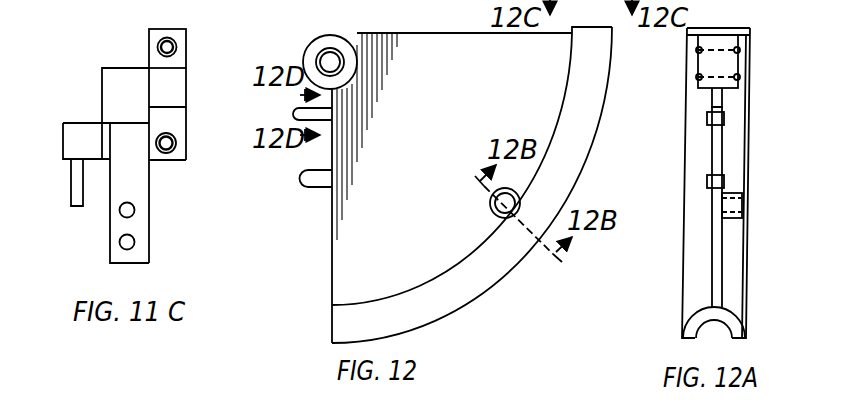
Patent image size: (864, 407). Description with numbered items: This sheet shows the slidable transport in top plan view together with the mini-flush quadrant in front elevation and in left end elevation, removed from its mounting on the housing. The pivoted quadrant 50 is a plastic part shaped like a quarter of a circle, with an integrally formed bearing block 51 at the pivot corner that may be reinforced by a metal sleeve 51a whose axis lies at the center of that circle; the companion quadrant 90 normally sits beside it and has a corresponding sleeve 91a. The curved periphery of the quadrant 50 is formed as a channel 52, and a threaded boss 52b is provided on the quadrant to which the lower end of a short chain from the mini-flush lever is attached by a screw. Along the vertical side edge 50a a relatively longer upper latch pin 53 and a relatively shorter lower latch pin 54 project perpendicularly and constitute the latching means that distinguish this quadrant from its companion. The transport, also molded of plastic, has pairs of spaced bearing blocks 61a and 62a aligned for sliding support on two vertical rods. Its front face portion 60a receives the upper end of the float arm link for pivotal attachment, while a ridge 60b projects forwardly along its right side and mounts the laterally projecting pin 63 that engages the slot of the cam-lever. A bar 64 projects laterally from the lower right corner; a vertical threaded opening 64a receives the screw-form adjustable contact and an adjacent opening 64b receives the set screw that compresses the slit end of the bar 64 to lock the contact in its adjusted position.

In FIG. 12, the pivoted quadrant 50 is at (431, 76).
In FIG. 12, the vertical side edge 50a is at (331, 267).
In FIG. 12A, the vertical side edge 50a is at (717, 143).
In FIG. 12, the bearing block 51 is at (313, 50).
In FIG. 12A, the bearing block 51 is at (718, 171).
In FIG. 12, the metal sleeve 51a is at (332, 50).
In FIG. 12, the channel 52 is at (480, 285).
In FIG. 12A, the channel 52 is at (727, 318).
In FIG. 12, the threaded boss 52b is at (492, 209).
In FIG. 12A, the threaded boss 52b is at (744, 207).
In FIG. 12, the upper latch pin 53 is at (294, 110).
In FIG. 12A, the upper latch pin 53 is at (725, 117).
In FIG. 12, the lower latch pin 54 is at (305, 177).
In FIG. 12A, the lower latch pin 54 is at (707, 185).
In FIG. 11C, the front face portion 60a is at (102, 84).
In FIG. 11C, the ridge 60b is at (72, 148).
In FIG. 11C, the bearing blocks 61a is at (157, 47).
In FIG. 11C, the bearing blocks 62a is at (176, 129).
In FIG. 11C, the pin 63 is at (71, 192).
In FIG. 11C, the bar 64 is at (135, 183).
In FIG. 11C, the threaded opening 64a is at (131, 212).
In FIG. 11C, the opening 64b is at (131, 244).
In FIG. 11C, the companion quadrant 90 is at (185, 397).
In FIG. 12, the metal sleeve 91a is at (397, 396).